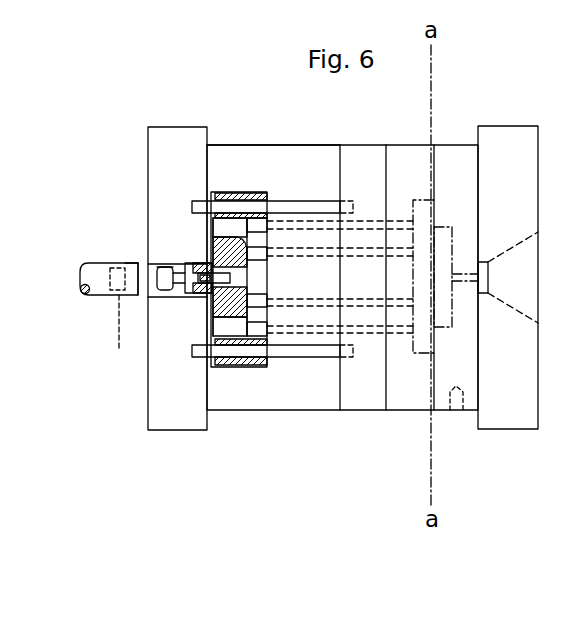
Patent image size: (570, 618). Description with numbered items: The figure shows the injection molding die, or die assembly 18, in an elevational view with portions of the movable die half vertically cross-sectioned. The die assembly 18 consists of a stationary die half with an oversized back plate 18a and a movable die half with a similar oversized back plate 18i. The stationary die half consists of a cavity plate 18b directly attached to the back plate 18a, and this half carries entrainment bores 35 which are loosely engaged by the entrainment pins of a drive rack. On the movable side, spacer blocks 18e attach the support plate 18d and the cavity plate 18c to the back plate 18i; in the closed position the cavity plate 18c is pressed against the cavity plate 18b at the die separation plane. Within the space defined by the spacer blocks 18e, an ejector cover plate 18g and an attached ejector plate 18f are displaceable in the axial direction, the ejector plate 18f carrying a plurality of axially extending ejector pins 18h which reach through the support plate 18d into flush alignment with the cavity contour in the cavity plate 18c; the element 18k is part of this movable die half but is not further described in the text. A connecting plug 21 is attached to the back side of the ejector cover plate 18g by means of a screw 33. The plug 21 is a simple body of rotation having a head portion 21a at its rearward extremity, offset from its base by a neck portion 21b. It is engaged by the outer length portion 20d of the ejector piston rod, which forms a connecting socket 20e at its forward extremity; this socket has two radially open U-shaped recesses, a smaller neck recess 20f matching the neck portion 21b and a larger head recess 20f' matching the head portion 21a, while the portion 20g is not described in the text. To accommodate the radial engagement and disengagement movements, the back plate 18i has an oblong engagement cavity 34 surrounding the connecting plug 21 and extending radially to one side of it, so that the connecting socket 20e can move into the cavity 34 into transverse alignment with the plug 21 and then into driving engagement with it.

The die assembly 18 is at (364, 413).
The back plate 18a is at (507, 137).
The cavity plate 18b is at (455, 148).
The cavity plate 18c is at (404, 148).
The support plate 18d is at (353, 148).
The spacer blocks 18e is at (257, 148).
The ejector plate 18f is at (262, 277).
The ejector cover plate 18g is at (232, 330).
The ejector pins 18h is at (278, 303).
The back plate 18i is at (173, 421).
The guide bar 18k is at (306, 207).
The outer length portion 20d is at (92, 298).
The connecting socket 20e is at (119, 260).
The neck recess 20f is at (153, 307).
The head recess 20f' is at (123, 337).
The shoulder 20g is at (135, 267).
The connecting plug 21 is at (195, 262).
The head portion 21a is at (163, 268).
The neck portion 21b is at (175, 275).
The screw 33 is at (237, 240).
The oblong engagement cavity 34 is at (150, 277).
The entrainment bores 35 is at (457, 404).